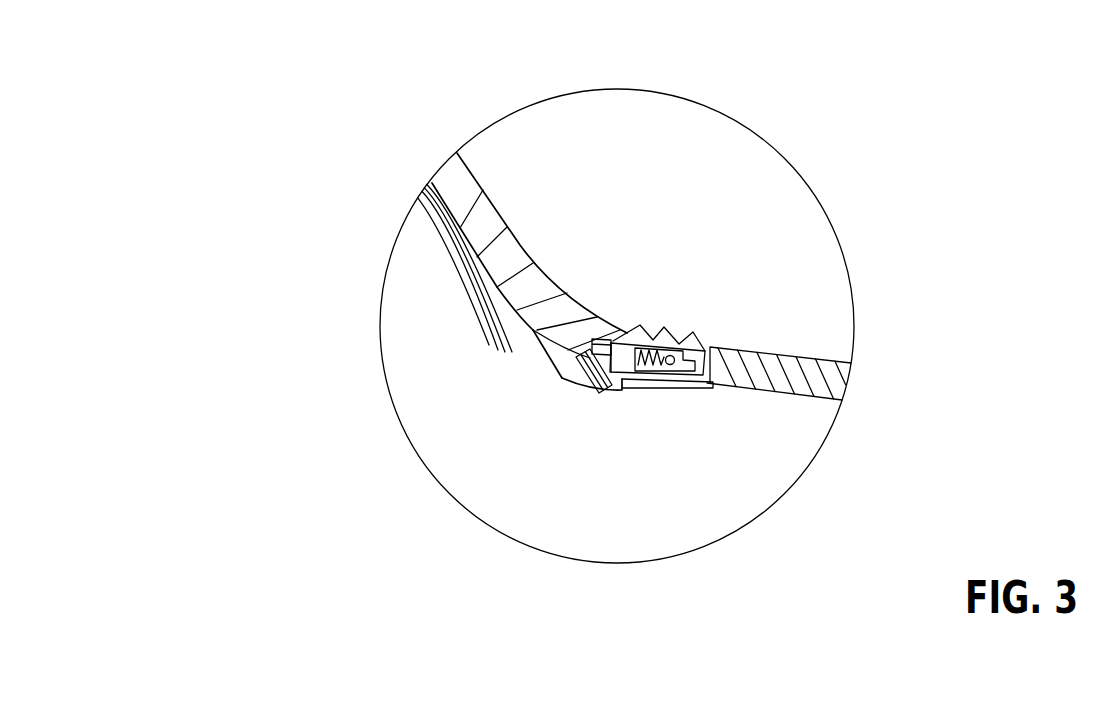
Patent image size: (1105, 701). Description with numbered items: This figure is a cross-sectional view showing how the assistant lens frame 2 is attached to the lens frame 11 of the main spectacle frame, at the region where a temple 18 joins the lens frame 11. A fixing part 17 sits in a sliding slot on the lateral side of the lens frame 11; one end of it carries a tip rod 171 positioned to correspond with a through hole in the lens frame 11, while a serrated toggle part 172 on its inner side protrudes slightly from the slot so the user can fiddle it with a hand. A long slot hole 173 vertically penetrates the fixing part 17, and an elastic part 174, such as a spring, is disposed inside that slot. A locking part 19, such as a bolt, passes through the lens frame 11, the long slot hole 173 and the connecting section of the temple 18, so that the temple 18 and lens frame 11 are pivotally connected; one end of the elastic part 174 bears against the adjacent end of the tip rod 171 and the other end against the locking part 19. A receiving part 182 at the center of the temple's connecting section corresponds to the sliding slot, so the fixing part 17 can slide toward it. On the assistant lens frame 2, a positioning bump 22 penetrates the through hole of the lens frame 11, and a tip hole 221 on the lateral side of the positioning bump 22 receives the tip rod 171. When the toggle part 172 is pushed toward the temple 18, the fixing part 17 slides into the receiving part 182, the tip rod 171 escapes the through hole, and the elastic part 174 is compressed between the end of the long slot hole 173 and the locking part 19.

The assistant lens frame 2 is at (432, 235).
The lens frame 11 is at (473, 187).
The fixing part 17 is at (677, 317).
The tip rod 171 is at (629, 330).
The serrated toggle part 172 is at (680, 337).
The long slot hole 173 is at (677, 380).
The elastic part 174 is at (650, 380).
The temple 18 is at (783, 393).
The receiving part 182 is at (705, 384).
The locking part 19 is at (665, 380).
The positioning bump 22 is at (558, 379).
The tip hole 221 is at (600, 387).